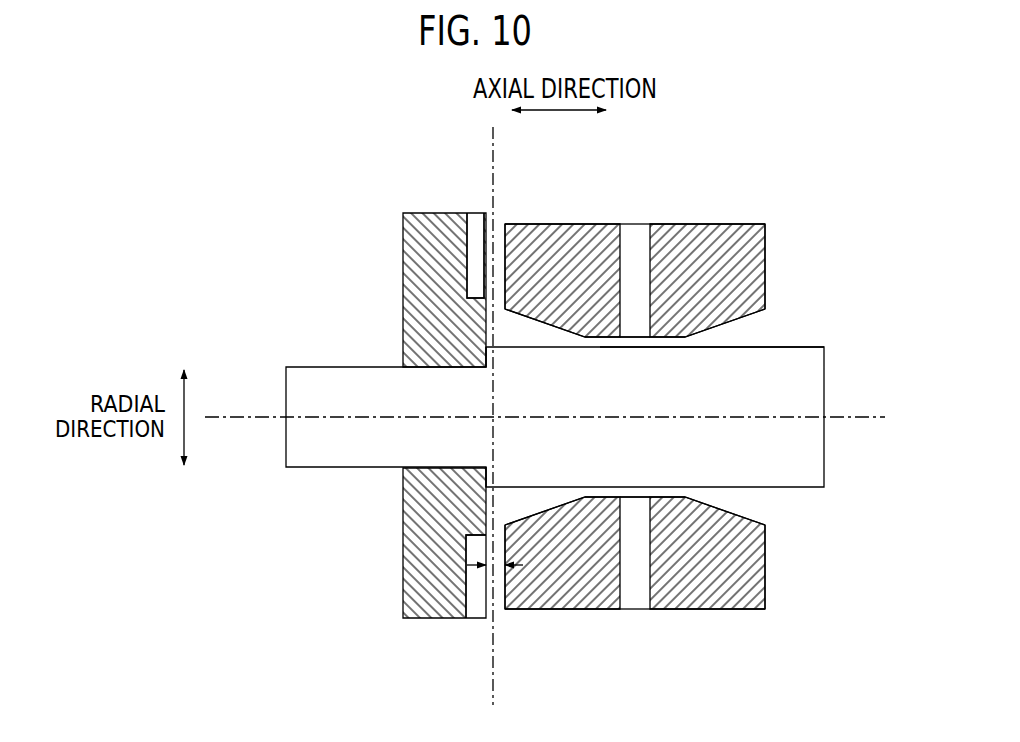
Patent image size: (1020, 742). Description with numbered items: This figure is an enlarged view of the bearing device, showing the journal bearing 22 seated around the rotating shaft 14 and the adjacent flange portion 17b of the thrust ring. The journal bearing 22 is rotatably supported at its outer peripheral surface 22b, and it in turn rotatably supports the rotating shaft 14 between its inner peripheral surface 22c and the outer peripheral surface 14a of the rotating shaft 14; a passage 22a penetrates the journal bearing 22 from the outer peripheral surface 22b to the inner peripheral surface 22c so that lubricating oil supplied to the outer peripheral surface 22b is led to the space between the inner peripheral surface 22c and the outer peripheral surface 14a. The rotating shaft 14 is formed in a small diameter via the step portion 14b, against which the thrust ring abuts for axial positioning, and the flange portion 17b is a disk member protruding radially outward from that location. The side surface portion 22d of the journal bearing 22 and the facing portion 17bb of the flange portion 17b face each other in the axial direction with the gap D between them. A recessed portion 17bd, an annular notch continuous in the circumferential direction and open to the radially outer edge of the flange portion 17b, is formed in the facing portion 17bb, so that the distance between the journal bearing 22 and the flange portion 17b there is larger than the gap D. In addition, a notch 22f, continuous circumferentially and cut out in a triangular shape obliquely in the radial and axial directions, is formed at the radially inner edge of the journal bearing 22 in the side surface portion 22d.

The rotating shaft 14 is at (824, 368).
The outer peripheral surface of rotating shaft 14a is at (807, 345).
The step portion 14b is at (486, 443).
The flange portion 17b is at (432, 213).
The facing portion 17bb is at (490, 282).
The recessed portion 17bd is at (468, 587).
The journal bearing 22 is at (723, 224).
The passage 22a is at (636, 224).
The outer peripheral surface of journal bearing 22b is at (590, 224).
The inner peripheral surface of journal bearing 22c is at (667, 347).
The side surface portion 22d is at (504, 268).
The notch 22f is at (547, 324).
The gap D is at (495, 144).